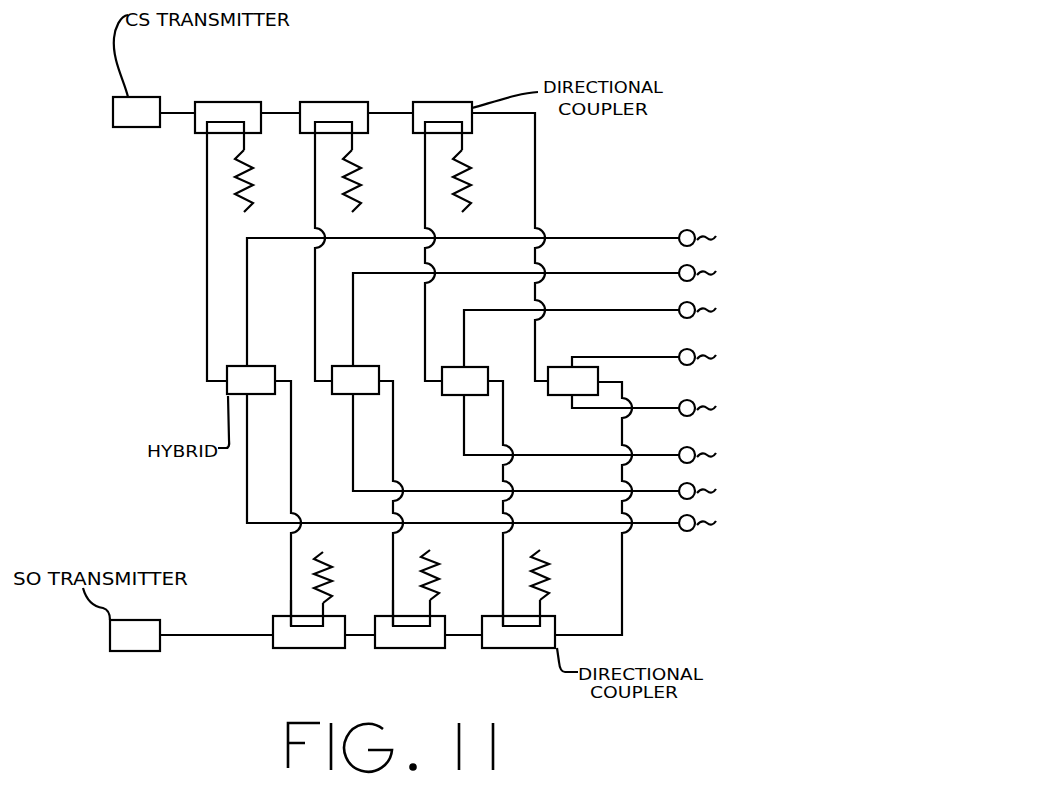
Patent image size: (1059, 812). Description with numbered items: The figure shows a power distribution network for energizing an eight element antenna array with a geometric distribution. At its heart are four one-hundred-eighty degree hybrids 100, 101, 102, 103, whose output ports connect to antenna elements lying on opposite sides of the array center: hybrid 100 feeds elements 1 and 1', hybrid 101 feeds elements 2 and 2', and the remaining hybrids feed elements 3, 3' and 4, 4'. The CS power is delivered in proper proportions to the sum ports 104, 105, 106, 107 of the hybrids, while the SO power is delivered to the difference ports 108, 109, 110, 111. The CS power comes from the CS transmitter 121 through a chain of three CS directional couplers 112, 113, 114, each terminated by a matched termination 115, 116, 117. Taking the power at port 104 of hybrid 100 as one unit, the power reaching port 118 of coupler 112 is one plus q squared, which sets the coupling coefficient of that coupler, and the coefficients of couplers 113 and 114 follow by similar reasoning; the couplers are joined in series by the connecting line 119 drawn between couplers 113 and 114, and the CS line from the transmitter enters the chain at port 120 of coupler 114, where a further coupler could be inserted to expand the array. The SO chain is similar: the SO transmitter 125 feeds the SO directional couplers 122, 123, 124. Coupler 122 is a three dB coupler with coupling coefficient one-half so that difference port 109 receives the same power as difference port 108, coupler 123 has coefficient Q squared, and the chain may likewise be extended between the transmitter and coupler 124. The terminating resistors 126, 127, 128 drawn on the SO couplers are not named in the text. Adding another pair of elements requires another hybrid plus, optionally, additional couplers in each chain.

The 180° hybrid 100 is at (573, 381).
The 180° hybrid 101 is at (465, 381).
The 180° hybrid 102 is at (355, 380).
The 180° hybrid 103 is at (251, 380).
The sum port 104 is at (542, 388).
The sum port 105 is at (432, 388).
The sum port 106 is at (322, 387).
The sum port 107 is at (214, 381).
The difference port 108 is at (613, 382).
The difference port 109 is at (498, 372).
The difference port 110 is at (392, 377).
The difference port 111 is at (283, 374).
The CS directional coupler 112 is at (458, 102).
The CS directional coupler 113 is at (330, 100).
The CS directional coupler 114 is at (228, 99).
The matched termination 115 is at (472, 163).
The matched termination 116 is at (360, 162).
The matched termination 117 is at (250, 162).
The port 118 is at (393, 110).
The transmission line 119 is at (277, 110).
The port 120 is at (175, 100).
The CS transmitter 121 is at (136, 112).
The SO directional coupler 122 is at (545, 655).
The SO directional coupler 123 is at (440, 656).
The SO directional coupler 124 is at (333, 660).
The SO transmitter 125 is at (135, 635).
The terminating resistor 126 is at (585, 560).
The terminating resistor 127 is at (438, 580).
The terminating resistor 128 is at (367, 560).
The antenna element 1 is at (708, 411).
The antenna element 2 is at (708, 458).
The antenna element 3 is at (708, 494).
The antenna element 4 is at (708, 526).
The antenna element 1' is at (709, 360).
The antenna element 2' is at (709, 313).
The antenna element 3' is at (709, 276).
The antenna element 4' is at (709, 241).